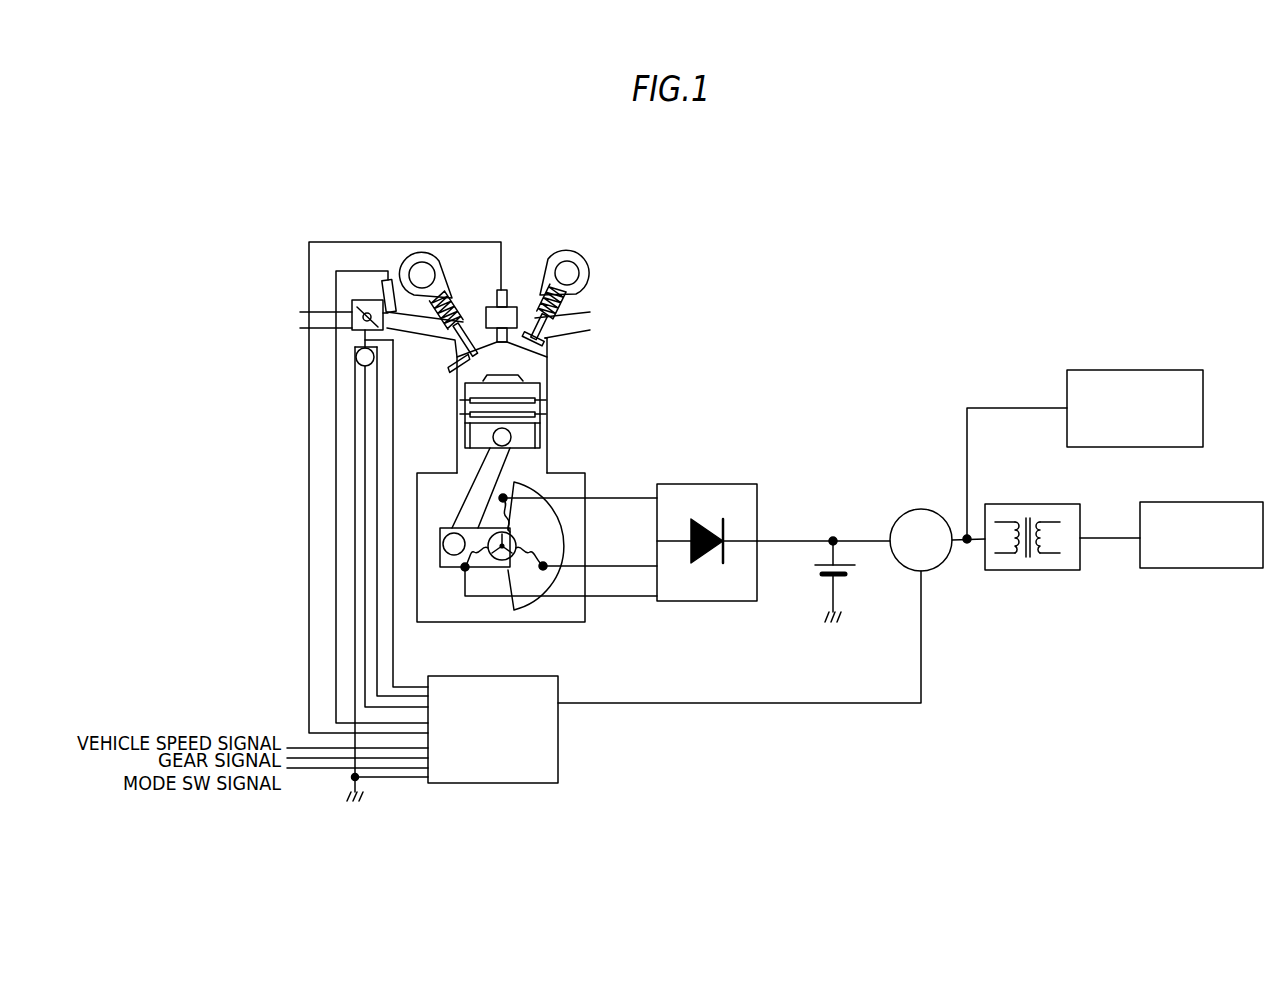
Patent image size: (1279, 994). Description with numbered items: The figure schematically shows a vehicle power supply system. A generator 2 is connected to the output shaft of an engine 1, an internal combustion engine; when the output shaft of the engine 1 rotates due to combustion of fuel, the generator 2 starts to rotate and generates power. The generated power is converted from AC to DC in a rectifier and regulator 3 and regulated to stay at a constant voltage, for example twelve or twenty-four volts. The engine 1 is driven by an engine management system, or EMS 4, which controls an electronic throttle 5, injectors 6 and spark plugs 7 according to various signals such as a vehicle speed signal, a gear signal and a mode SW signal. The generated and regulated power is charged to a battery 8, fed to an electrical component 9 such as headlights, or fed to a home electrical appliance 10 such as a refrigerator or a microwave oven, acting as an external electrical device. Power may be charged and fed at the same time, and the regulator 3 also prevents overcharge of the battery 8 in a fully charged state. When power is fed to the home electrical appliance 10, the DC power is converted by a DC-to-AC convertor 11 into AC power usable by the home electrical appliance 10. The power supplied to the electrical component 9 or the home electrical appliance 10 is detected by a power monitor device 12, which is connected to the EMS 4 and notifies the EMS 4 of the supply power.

The engine 1 is at (575, 473).
The generator 2 is at (470, 572).
The rectifier and regulator 3 is at (683, 484).
The engine management system (EMS) 4 is at (558, 742).
The electronic throttle 5 is at (352, 315).
The injector 6 is at (390, 282).
The spark plug 7 is at (505, 288).
The battery 8 is at (827, 580).
The electrical component 9 is at (1117, 370).
The home electrical appliance 10 is at (1197, 502).
The DC-to-AC convertor 11 is at (1003, 504).
The power monitor device 12 is at (904, 510).